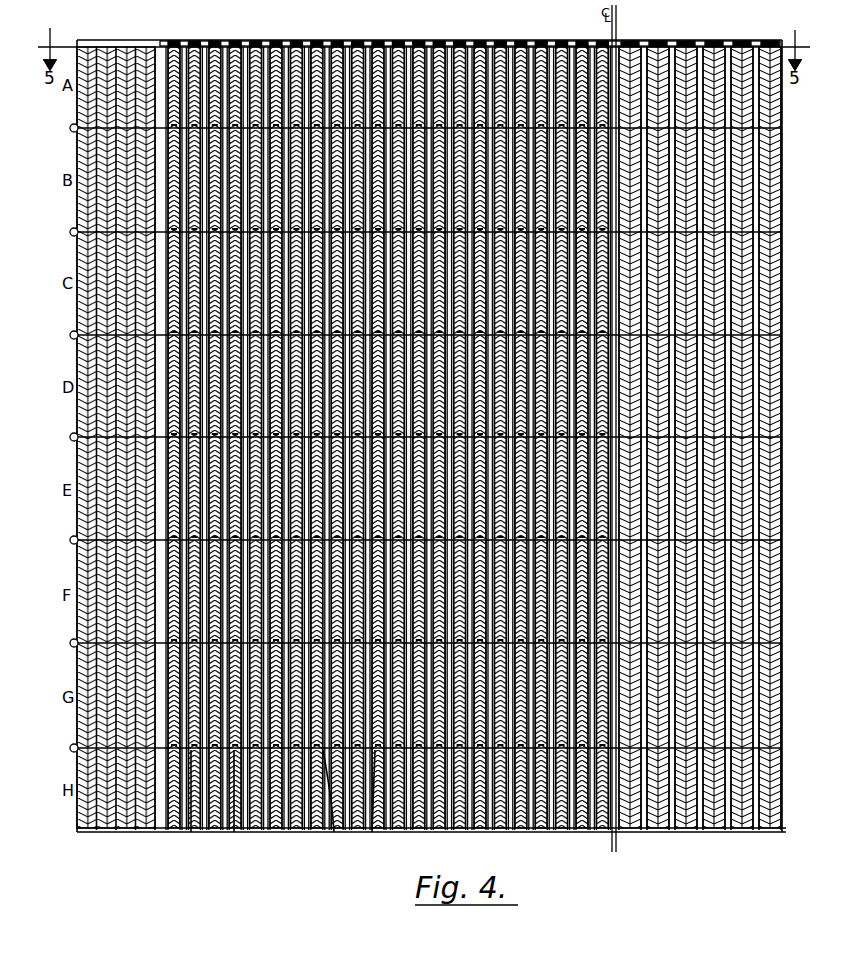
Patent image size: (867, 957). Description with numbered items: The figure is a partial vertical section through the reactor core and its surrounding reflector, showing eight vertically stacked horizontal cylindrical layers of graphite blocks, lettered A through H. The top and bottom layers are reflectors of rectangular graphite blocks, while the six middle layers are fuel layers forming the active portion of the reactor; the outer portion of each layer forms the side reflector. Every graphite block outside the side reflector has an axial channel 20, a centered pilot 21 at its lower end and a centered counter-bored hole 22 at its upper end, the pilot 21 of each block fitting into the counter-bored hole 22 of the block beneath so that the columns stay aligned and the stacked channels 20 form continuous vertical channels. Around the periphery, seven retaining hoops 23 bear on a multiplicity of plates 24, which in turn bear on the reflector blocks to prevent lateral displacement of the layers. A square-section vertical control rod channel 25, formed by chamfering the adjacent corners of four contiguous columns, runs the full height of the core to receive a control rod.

The axial channel 20 is at (341, 40).
The centered pilot 21 is at (226, 848).
The centered counter-bored hole 22 is at (364, 848).
The retaining hoop 23 is at (70, 335).
The plate 24 is at (70, 540).
The vertical control rod channel 25 is at (620, 40).